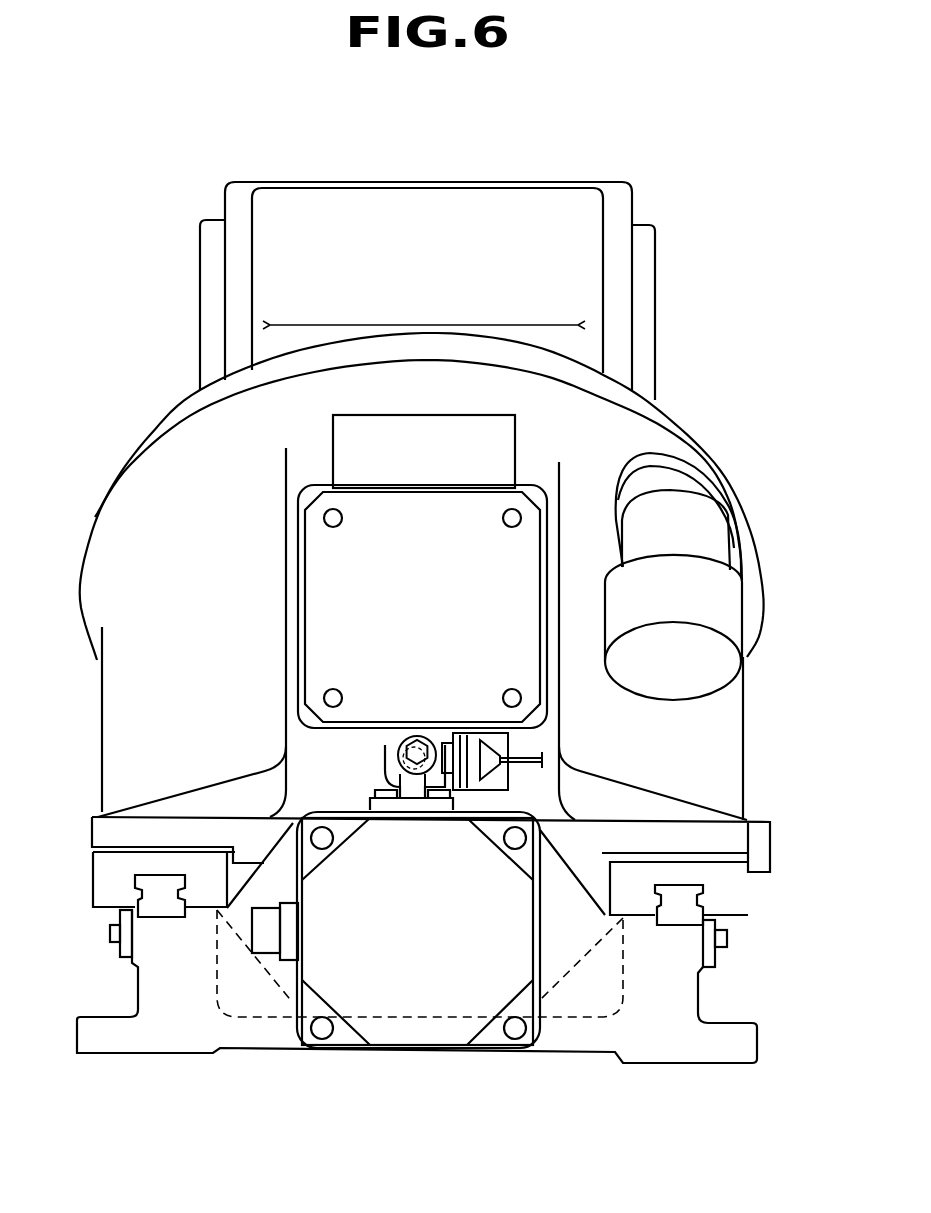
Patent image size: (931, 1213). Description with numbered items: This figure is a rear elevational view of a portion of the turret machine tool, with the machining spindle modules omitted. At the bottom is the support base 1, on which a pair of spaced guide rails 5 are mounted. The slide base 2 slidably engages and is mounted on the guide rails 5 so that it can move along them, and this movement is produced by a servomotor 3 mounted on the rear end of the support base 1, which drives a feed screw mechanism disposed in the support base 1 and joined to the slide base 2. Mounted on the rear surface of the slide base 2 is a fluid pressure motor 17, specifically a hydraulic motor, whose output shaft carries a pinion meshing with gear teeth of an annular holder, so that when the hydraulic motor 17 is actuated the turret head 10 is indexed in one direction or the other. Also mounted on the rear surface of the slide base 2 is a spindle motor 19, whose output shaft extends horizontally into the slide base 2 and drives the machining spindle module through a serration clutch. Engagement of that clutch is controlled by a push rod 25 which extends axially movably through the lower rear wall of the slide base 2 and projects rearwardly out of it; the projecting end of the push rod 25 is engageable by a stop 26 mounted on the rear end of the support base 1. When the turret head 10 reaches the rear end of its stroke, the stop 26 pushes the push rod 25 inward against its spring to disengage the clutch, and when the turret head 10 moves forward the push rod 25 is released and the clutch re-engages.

The support base 1 is at (270, 1030).
The slide base 2 is at (643, 442).
The servomotor 3 is at (442, 983).
The guide rails 5 is at (150, 897).
The turret head 10 is at (533, 205).
The fluid pressure motor 17 is at (727, 602).
The spindle motor 19 is at (313, 577).
The push rod 25 is at (443, 733).
The stop 26 is at (412, 733).